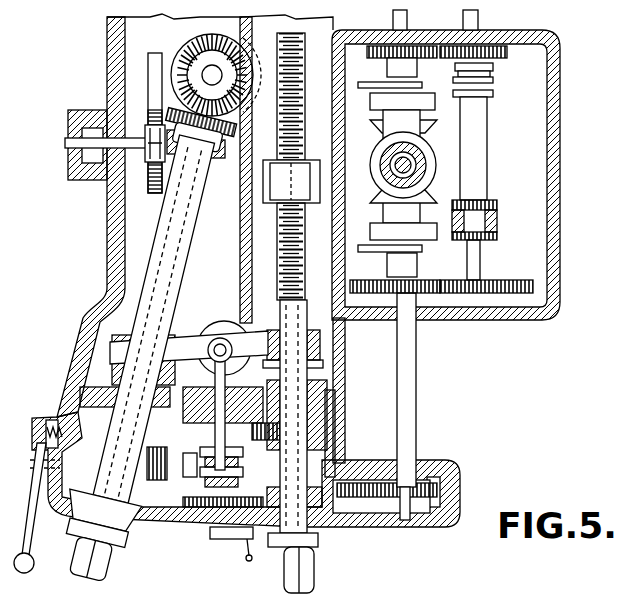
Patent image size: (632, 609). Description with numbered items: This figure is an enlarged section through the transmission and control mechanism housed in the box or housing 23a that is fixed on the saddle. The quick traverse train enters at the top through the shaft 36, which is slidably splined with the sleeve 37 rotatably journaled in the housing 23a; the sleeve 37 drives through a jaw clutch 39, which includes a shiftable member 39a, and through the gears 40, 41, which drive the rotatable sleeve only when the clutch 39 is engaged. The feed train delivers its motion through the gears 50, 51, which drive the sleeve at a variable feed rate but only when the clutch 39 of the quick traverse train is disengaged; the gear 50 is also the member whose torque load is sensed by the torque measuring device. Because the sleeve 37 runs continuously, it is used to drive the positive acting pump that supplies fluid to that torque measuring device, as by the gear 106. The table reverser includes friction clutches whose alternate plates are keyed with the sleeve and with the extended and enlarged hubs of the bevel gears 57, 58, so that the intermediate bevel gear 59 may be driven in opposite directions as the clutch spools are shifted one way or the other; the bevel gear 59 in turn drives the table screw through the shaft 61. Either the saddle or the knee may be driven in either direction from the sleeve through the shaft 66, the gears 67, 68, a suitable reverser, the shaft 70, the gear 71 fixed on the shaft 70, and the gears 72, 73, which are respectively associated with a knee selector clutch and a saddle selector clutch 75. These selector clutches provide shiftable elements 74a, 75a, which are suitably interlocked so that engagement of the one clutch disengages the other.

The shaft 66 is at (416, 375).
The shaft 36 is at (480, 20).
The gear 41 is at (372, 56).
The gear 40 is at (445, 58).
The jaw clutch 39 is at (487, 55).
The shiftable member 39a is at (483, 72).
The bevel gear 58 is at (428, 127).
The sleeve 37 is at (488, 135).
The intermediate bevel gear 59 is at (378, 162).
The bevel gear 57 is at (428, 192).
The shaft 61 is at (387, 182).
The gear 106 is at (497, 207).
The gear 51 is at (435, 280).
The gear 50 is at (512, 280).
The box or housing 23a is at (538, 320).
The shiftable element 75a is at (320, 335).
The saddle selector clutch 75 is at (330, 358).
The gear 73 is at (330, 408).
The gear 67 is at (445, 475).
The gear 68 is at (360, 500).
The shiftable element 74a is at (85, 318).
The gear 72 is at (77, 378).
The shaft 70 is at (216, 390).
The gear 71 is at (234, 390).